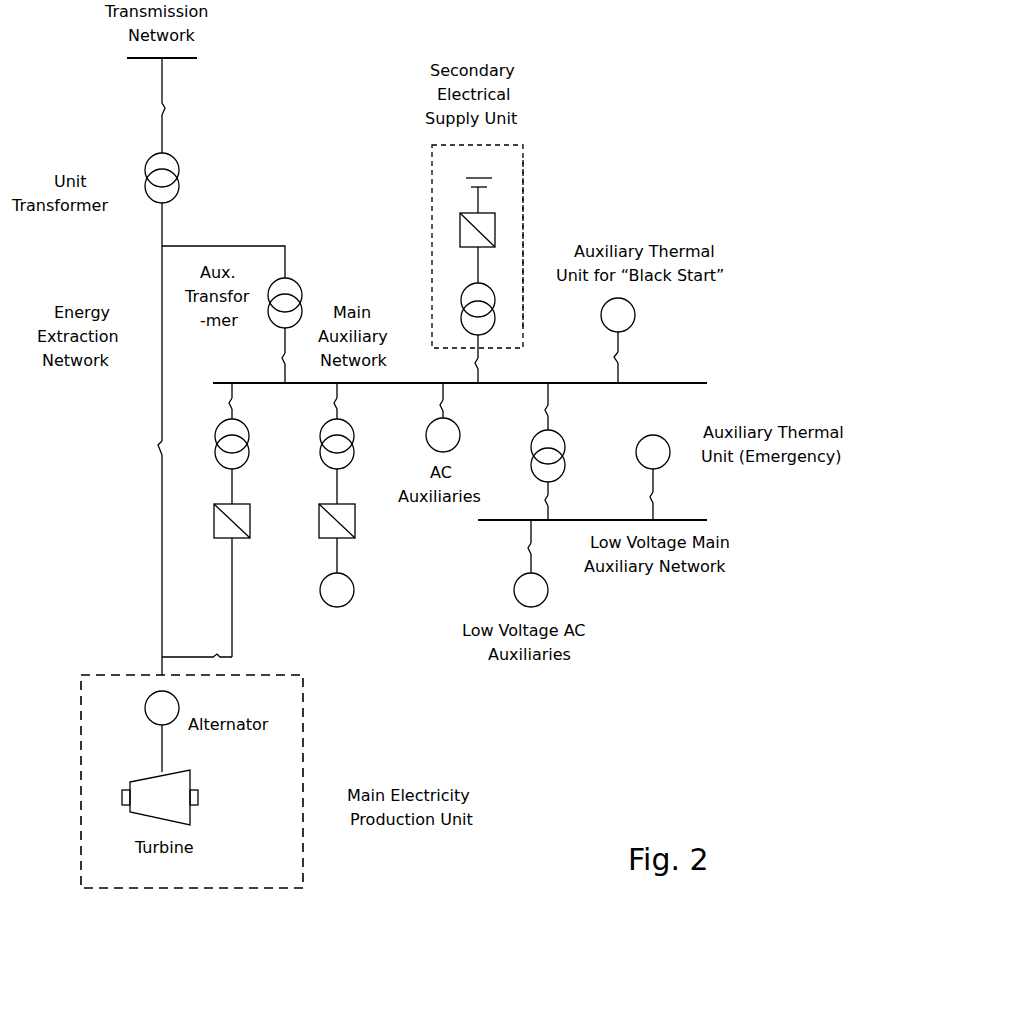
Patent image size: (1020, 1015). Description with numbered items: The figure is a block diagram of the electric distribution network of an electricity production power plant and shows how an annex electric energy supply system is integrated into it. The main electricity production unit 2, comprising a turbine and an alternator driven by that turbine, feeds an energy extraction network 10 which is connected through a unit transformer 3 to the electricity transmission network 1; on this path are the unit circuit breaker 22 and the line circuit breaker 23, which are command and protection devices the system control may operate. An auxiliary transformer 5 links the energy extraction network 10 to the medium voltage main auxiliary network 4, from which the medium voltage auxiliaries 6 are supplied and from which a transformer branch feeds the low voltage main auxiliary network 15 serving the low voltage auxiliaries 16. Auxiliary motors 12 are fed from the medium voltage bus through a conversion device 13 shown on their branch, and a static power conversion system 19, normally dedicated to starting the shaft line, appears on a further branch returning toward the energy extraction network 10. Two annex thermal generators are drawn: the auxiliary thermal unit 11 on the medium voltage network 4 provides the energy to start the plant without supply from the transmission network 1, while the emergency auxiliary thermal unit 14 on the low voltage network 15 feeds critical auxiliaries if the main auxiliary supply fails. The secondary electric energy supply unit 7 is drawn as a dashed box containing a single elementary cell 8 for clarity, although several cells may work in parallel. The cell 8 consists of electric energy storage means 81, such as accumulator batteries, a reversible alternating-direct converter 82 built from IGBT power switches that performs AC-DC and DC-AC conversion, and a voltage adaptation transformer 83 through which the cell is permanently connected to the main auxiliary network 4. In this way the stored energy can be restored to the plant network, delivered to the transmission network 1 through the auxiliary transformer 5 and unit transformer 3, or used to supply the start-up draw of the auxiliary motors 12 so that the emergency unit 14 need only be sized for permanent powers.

The electricity transmission network 1 is at (190, 62).
The main electricity production unit 2 is at (306, 746).
The unit transformer 3 is at (150, 200).
The medium voltage main auxiliary network 4 is at (414, 372).
The auxiliary transformer 5 is at (272, 321).
The medium voltage auxiliaries 6 is at (427, 441).
The secondary electric energy supply unit 7 is at (423, 147).
The elementary unit 8 is at (524, 192).
The electric energy storage means 81 is at (448, 179).
The reversible alternating-direct converter 82 is at (460, 230).
The voltage adaptation transformer 83 is at (494, 286).
The energy extraction network 10 is at (145, 386).
The auxiliary thermal unit for black start 11 is at (636, 313).
The auxiliary motors 12 is at (342, 610).
The converter 13 is at (356, 522).
The auxiliary thermal unit (emergency) 14 is at (660, 436).
The low voltage main auxiliary network 15 is at (710, 512).
The low voltage auxiliaries 16 is at (518, 579).
The static power conversion system 19 is at (240, 540).
The unit circuit breaker 22 is at (156, 449).
The line circuit breaker 23 is at (148, 113).